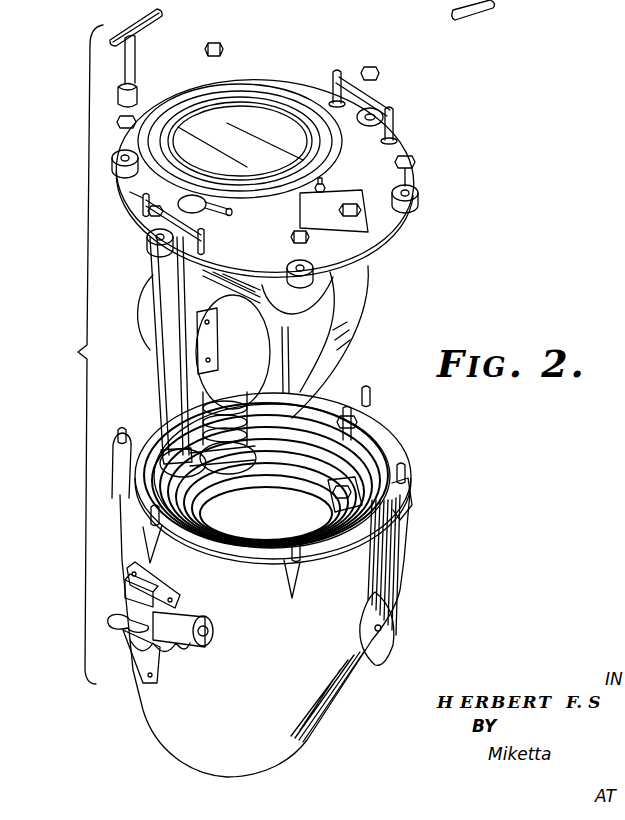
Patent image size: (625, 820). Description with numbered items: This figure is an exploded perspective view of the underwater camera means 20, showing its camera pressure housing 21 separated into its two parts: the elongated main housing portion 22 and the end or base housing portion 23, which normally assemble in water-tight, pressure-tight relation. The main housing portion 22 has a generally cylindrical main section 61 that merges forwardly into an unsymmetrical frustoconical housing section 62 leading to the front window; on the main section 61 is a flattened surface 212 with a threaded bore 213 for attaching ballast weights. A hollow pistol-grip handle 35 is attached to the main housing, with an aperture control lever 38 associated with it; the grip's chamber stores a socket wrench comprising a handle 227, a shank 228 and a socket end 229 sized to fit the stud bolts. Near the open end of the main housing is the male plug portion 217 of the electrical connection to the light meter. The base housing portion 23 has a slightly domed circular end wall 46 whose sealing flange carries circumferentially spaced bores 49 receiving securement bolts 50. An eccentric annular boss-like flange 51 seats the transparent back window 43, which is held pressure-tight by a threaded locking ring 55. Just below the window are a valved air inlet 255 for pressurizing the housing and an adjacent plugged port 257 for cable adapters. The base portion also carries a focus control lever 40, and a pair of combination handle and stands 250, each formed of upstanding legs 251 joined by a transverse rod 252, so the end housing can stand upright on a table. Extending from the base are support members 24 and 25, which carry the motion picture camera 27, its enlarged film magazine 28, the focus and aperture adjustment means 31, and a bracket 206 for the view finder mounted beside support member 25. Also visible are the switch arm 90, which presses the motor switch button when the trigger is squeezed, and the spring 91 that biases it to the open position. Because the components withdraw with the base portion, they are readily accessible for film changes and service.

The underwater camera means 20 is at (394, 293).
The camera pressure housing 21 is at (289, 299).
The main housing portion 22 is at (172, 708).
The base housing portion 23 is at (120, 190).
The support member 24 is at (350, 310).
The support member 25 is at (170, 397).
The motion picture camera 27 is at (243, 387).
The film magazine 28 is at (293, 315).
The adjustment means 31 is at (146, 472).
The handle 35 is at (177, 618).
The aperture control lever 38 is at (115, 625).
The focus control lever 40 is at (220, 207).
The back window 43 is at (228, 113).
The circular end wall 46 is at (377, 163).
The bores 49 is at (412, 192).
The securement bolts 50 is at (370, 397).
The annular boss-like flange 51 is at (187, 92).
The locking ring 55 is at (287, 92).
The main section 61 is at (116, 541).
The frustoconical housing section 62 is at (323, 717).
The switch arm 90 is at (345, 490).
The spring 91 is at (320, 540).
The bracket 206 is at (200, 340).
The flattened surface 212 is at (383, 638).
The threaded bore 213 is at (380, 627).
The male plug portion 217 is at (352, 423).
The wrench handle 227 is at (140, 16).
The wrench shank 228 is at (133, 53).
The socket end 229 is at (117, 97).
The combination handle and stand 250 is at (409, 102).
The legs 251 is at (333, 76).
The transverse rod 252 is at (370, 95).
The valved air inlet 255 is at (283, 237).
The plugged port 257 is at (397, 221).